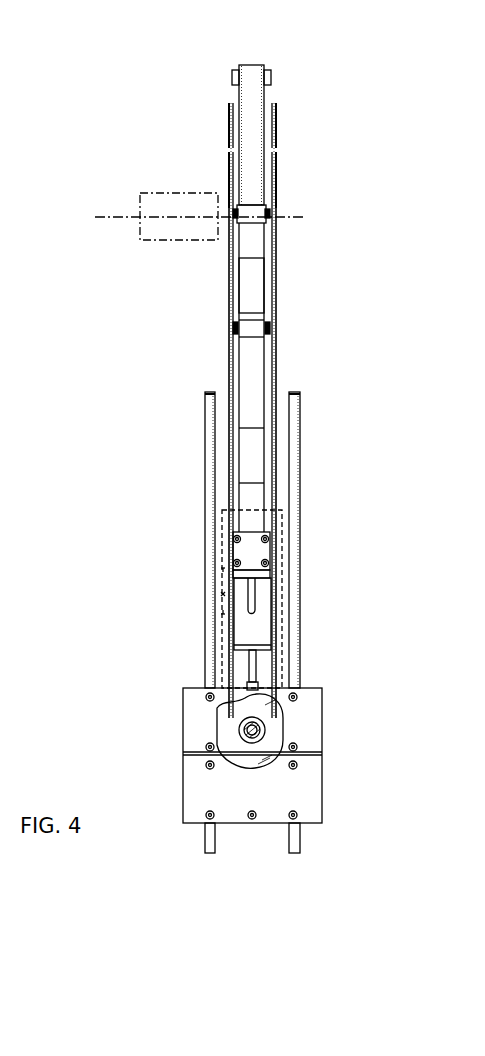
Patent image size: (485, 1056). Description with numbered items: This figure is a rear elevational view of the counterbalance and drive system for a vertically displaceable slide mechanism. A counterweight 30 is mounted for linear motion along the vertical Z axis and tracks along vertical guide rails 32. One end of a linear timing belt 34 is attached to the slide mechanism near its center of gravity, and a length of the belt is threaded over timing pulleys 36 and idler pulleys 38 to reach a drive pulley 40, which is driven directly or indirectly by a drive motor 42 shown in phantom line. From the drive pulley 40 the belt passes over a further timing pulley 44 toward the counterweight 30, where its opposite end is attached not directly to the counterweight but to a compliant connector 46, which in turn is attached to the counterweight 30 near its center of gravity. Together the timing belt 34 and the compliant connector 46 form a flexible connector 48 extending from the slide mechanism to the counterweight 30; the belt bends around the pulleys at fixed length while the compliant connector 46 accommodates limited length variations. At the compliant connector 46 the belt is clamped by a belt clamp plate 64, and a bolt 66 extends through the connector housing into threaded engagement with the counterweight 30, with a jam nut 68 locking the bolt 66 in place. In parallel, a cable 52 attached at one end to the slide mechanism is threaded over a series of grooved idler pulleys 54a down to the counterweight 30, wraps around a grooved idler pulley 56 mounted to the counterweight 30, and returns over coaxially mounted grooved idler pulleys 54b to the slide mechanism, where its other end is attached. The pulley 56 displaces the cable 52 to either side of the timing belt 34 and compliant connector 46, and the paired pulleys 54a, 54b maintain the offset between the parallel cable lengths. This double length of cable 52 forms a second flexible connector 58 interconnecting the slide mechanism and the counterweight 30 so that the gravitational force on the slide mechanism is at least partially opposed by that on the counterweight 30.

The counterweight 30 is at (310, 732).
The vertical guide rails 32 is at (298, 447).
The linear timing belt 34 is at (248, 64).
The timing pulleys 36 is at (232, 77).
The idler pulleys 38 is at (263, 290).
The drive pulley 40 is at (268, 222).
The drive motor 42 is at (170, 241).
The timing pulley 44 is at (268, 322).
The compliant connector 46 is at (272, 590).
The flexible connector 48 is at (272, 373).
The cable 52 is at (231, 373).
The grooved idler pulleys 54a is at (276, 118).
The grooved idler pulleys 54b is at (229, 110).
The grooved idler pulley 56 is at (222, 732).
The flexible connector 58 is at (221, 290).
The belt clamp plate 64 is at (245, 550).
The bolt 66 is at (245, 660).
The jam nut 68 is at (258, 685).